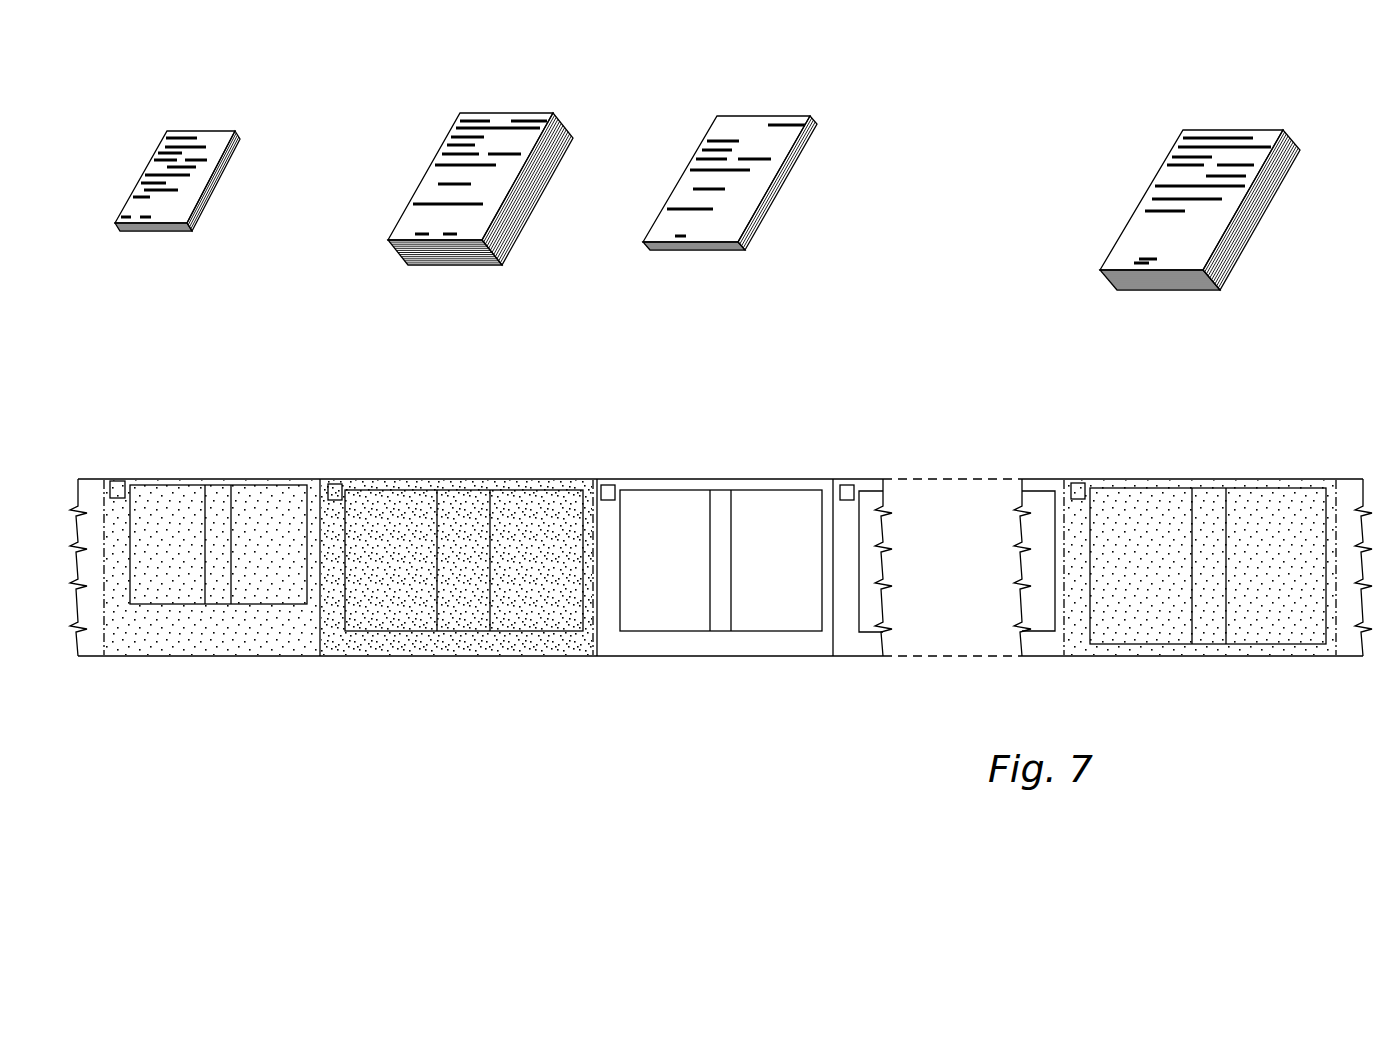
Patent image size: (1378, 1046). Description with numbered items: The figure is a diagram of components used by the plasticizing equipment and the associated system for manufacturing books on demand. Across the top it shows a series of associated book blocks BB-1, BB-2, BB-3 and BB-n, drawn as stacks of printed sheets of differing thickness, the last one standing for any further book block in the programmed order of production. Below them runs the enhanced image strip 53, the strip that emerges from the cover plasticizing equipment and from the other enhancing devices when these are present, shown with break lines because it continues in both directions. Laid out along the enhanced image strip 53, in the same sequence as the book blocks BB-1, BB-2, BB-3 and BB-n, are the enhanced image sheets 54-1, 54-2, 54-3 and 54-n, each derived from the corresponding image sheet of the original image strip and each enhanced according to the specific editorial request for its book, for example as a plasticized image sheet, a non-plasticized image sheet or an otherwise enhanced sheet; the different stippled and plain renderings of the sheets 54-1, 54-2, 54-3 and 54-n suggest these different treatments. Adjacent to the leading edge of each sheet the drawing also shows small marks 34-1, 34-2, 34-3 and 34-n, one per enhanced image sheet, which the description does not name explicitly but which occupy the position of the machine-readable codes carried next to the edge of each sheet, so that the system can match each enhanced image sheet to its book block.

The book block BB-1 is at (222, 110).
The book block BB-2 is at (528, 96).
The book block BB-3 is at (772, 99).
The book block BB-n is at (1249, 112).
The identification mark of book block 1 34-1 is at (124, 481).
The identification mark of book block 2 34-2 is at (336, 487).
The identification mark of book block 3 34-3 is at (608, 482).
The identification mark of book block n 34-n is at (1081, 486).
The enhanced image sheet 54-1 is at (259, 495).
The enhanced image sheet 54-2 is at (537, 497).
The enhanced image sheet 54-3 is at (768, 498).
The enhanced image sheet 54-n is at (1255, 502).
The enhanced image strip 53 is at (1352, 647).